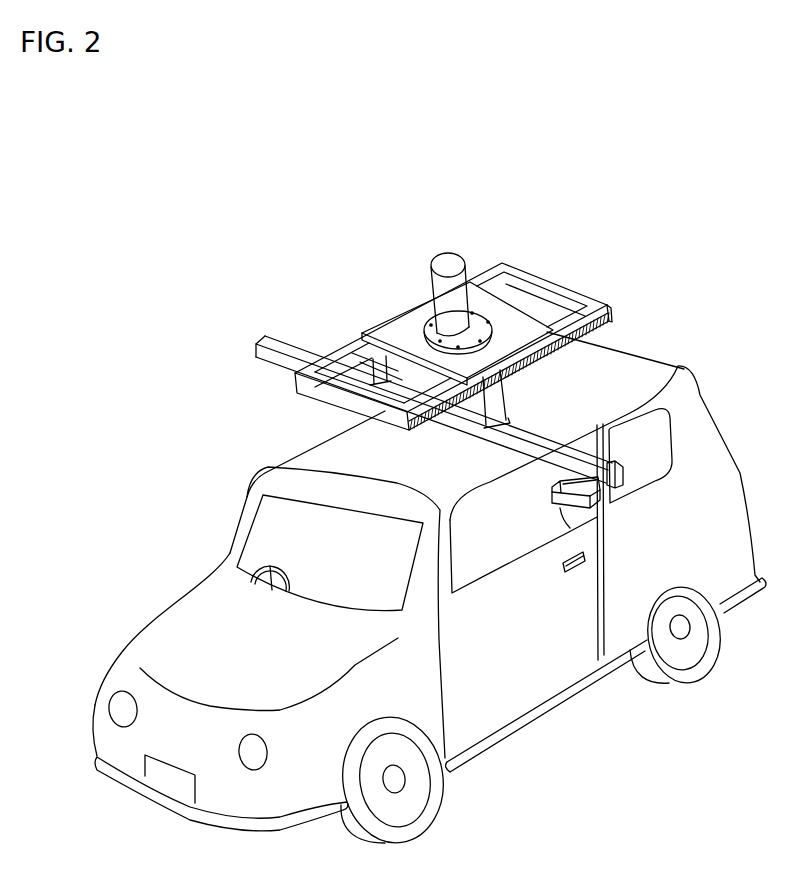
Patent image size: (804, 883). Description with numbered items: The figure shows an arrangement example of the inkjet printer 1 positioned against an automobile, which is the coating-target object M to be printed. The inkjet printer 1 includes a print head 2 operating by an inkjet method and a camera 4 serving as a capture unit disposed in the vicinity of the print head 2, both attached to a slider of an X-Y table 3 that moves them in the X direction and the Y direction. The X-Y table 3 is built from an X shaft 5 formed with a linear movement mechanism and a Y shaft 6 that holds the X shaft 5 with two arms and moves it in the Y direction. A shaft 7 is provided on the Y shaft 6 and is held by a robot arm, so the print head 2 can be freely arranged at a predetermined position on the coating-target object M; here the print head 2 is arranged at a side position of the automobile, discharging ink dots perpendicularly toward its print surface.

The inkjet printer 1 is at (344, 302).
The print head 2 is at (577, 503).
The X-Y table 3 is at (586, 287).
The camera 4 is at (565, 497).
The X shaft 5 is at (290, 345).
The Y shaft 6 is at (560, 342).
The shaft 7 is at (446, 262).
The coating-target object M is at (620, 363).